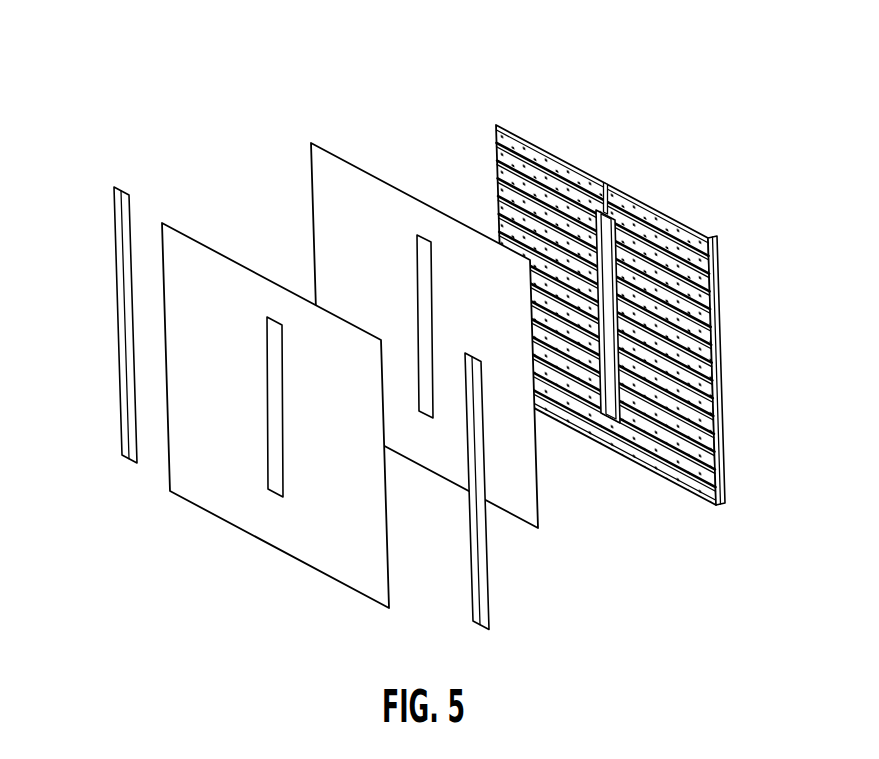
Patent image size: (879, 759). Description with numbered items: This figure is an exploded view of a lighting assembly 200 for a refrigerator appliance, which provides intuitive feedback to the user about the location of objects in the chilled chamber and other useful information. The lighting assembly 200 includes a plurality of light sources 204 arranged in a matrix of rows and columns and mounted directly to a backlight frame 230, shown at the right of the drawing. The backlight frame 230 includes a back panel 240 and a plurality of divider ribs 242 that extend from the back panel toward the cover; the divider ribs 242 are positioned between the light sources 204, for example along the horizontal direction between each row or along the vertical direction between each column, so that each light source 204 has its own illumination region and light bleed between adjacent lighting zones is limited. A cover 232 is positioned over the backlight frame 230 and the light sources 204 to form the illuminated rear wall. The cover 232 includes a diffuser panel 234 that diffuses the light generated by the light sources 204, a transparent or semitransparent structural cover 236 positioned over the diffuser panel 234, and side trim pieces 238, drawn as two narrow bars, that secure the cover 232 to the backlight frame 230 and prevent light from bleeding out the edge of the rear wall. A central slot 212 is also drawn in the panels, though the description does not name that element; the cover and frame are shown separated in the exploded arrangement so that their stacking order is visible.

The lighting assembly 200 is at (596, 92).
The light sources 204 is at (705, 362).
The slot channel 212 is at (606, 295).
The backlight frame 230 is at (725, 474).
The cover 232 is at (301, 108).
The diffuser panel 234 is at (524, 508).
The structural cover 236 is at (333, 567).
The side trim pieces 238 is at (120, 448).
The back panel 240 is at (633, 200).
The divider ribs 242 is at (604, 185).